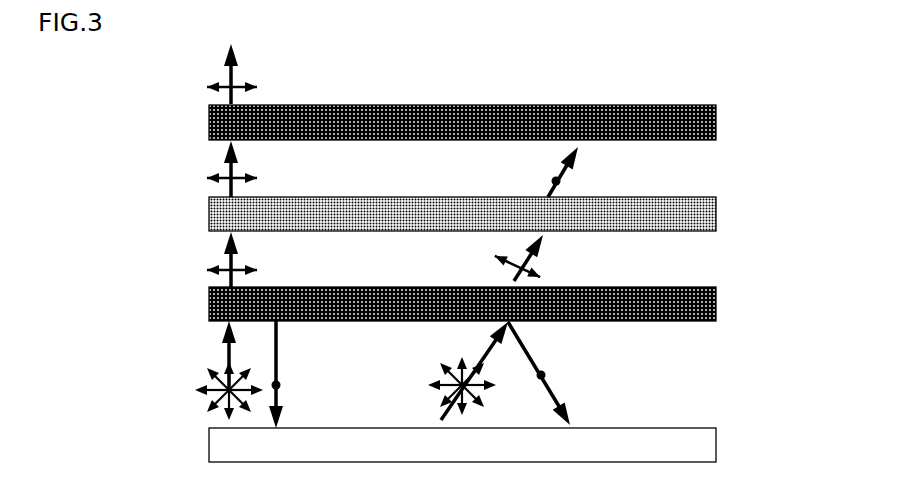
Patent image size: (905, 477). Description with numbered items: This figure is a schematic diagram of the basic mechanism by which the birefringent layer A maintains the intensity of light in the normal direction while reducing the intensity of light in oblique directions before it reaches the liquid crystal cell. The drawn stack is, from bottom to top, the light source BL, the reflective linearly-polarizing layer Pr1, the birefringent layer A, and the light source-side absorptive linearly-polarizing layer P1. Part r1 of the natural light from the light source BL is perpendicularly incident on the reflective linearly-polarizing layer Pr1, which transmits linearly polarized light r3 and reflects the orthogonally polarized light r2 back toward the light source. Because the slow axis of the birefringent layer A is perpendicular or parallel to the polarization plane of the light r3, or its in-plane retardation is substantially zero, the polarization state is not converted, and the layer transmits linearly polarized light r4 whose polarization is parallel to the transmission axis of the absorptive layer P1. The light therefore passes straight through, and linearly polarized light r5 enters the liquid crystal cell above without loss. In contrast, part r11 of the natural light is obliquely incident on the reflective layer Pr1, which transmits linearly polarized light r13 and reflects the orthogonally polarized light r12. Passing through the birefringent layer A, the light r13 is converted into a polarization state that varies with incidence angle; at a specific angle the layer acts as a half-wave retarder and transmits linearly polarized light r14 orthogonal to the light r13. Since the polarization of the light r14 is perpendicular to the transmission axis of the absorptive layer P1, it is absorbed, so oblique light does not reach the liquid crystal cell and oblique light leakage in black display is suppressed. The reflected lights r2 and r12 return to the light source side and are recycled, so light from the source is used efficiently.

The light source-side absorptive linearly-polarizing layer P1 is at (716, 123).
The birefringent layer A is at (716, 212).
The reflective linearly-polarizing layer Pr1 is at (716, 303).
The light source BL is at (716, 442).
The part of natural light perpendicularly incident on the reflective linearly-polari r1 is at (205, 370).
The linearly polarized light reflected by the reflective linearly-polarizing layer r2 is at (302, 374).
The linearly polarized light transmitted by the reflective linearly-polarizing layer r3 is at (209, 259).
The linearly polarized light transmitted by the birefringent layer r4 is at (209, 169).
The linearly polarized light passing through the light source-side absorptive linear r5 is at (209, 74).
The part of natural light obliquely incident on the reflective linearly-polarizing l r11 is at (446, 369).
The obliquely reflected linearly polarized light r12 is at (559, 375).
The obliquely transmitted linearly polarized light r13 is at (494, 256).
The linearly polarized light orthogonal to r13 transmitted by the birefringent layer r14 is at (538, 170).